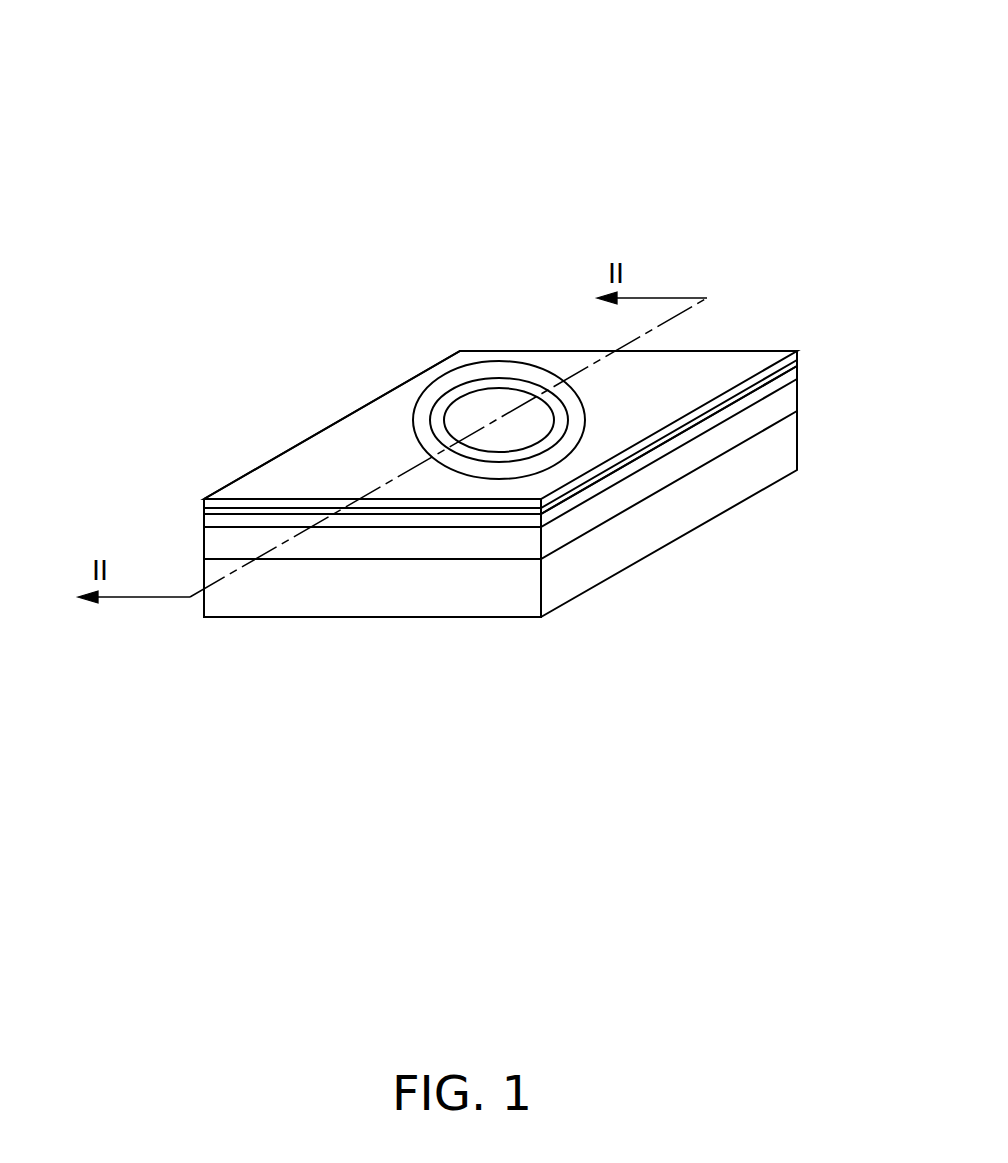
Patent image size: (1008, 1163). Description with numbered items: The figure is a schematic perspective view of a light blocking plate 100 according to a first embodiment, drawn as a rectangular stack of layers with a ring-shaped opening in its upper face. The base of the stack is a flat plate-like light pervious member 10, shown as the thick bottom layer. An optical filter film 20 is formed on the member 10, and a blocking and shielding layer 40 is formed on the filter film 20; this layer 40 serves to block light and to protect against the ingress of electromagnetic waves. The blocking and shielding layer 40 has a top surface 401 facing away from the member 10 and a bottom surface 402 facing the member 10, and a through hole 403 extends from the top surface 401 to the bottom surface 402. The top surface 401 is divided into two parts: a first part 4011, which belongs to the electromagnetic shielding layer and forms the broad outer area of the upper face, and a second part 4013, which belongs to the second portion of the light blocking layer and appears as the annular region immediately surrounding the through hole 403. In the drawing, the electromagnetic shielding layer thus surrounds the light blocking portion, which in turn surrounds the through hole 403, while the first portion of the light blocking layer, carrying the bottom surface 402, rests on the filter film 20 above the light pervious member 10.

The light blocking plate 100 is at (347, 80).
The light pervious member 10 is at (583, 567).
The optical filter film 20 is at (713, 442).
The blocking and shielding layer 40 is at (768, 378).
The top surface 401 is at (230, 297).
The first part of the top surface 4011 is at (368, 466).
The second part of the top surface 4013 is at (442, 420).
The bottom surface 402 is at (677, 450).
The through hole 403 is at (483, 405).